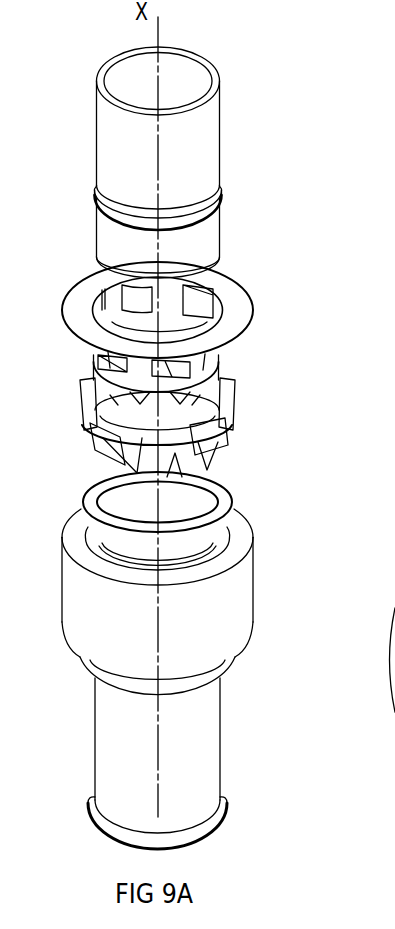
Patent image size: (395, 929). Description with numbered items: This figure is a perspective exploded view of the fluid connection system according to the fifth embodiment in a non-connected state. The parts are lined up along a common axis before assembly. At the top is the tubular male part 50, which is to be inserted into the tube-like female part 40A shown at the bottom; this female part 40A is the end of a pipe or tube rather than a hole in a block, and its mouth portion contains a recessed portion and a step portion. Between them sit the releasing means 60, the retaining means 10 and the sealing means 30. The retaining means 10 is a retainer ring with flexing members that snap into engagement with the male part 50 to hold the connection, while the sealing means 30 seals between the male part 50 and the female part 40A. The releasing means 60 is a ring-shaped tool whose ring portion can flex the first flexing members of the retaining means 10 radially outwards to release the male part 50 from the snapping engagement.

The retaining means 10 is at (227, 413).
The sealing means 30 is at (223, 492).
The female part 40A is at (233, 588).
The tubular male part 50 is at (192, 145).
The releasing means 60 is at (233, 308).